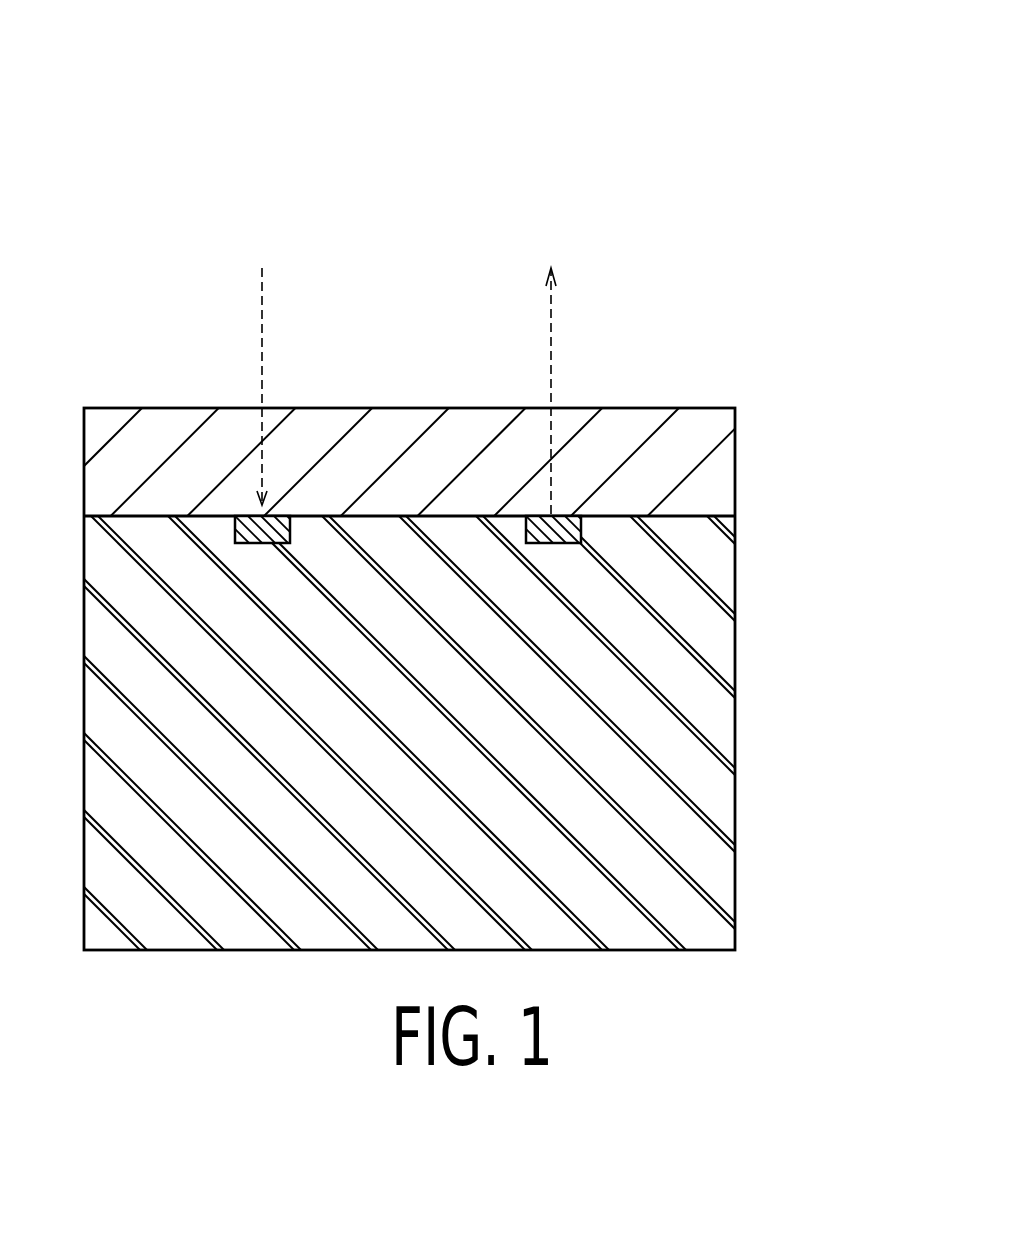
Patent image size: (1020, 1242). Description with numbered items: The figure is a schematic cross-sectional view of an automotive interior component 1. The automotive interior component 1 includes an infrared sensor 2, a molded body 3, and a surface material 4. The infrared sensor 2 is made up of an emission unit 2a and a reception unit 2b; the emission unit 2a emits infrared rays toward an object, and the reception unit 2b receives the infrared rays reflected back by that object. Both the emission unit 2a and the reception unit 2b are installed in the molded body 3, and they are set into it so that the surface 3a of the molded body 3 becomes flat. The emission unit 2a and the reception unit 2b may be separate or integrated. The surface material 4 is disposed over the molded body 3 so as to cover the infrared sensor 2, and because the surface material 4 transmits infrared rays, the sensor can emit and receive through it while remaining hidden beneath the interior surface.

The automotive interior component 1 is at (510, 482).
The infrared sensor 2 is at (530, 605).
The emission unit 2a is at (556, 543).
The reception unit 2b is at (290, 540).
The molded body 3 is at (733, 798).
The surface of the molded body 3a is at (692, 516).
The surface material 4 is at (729, 426).